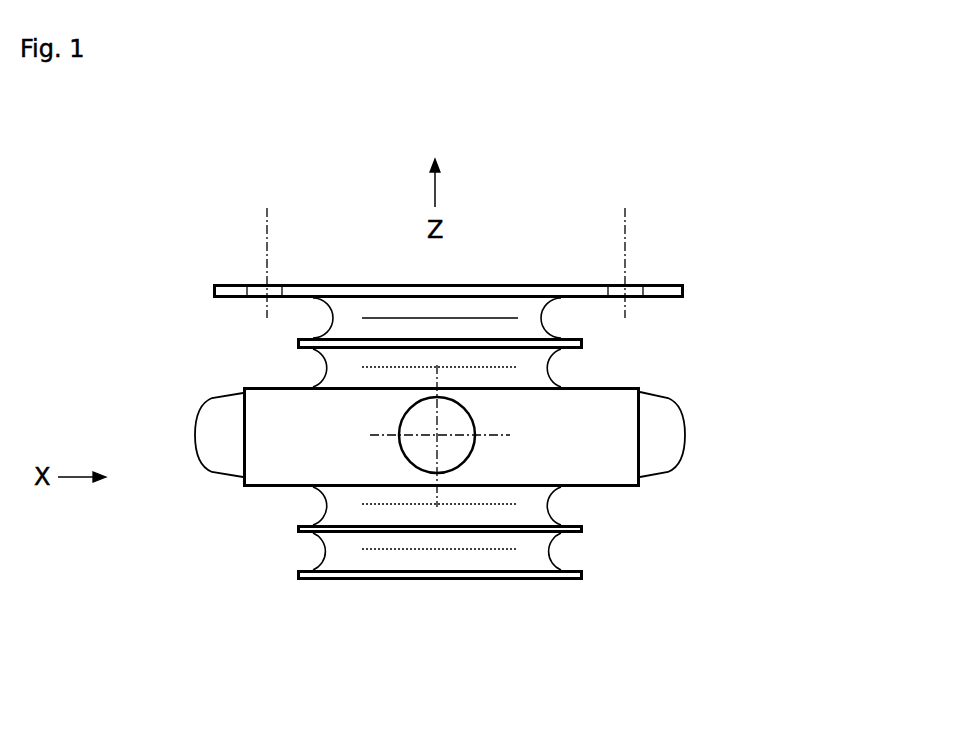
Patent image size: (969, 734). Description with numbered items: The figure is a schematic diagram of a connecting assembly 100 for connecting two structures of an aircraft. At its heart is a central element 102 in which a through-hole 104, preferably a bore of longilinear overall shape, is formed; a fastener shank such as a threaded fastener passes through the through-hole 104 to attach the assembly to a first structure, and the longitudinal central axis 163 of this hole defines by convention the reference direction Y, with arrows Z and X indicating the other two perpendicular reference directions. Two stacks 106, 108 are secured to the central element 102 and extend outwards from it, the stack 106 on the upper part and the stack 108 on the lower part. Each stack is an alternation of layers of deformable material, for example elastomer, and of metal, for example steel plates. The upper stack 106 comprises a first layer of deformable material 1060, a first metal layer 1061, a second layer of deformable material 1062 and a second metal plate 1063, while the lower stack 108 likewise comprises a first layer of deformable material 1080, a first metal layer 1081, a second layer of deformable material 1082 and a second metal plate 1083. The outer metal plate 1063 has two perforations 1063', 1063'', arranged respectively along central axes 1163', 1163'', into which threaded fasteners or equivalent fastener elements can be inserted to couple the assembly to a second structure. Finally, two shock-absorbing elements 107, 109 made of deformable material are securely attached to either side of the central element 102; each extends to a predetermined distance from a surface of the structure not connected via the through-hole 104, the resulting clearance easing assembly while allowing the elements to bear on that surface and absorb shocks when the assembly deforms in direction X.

The connecting assembly 100 is at (363, 166).
The central element 102 is at (262, 402).
The through-hole 104 is at (458, 453).
The stack 106 is at (717, 284).
The shock-absorbing element 107 is at (688, 455).
The stack 108 is at (717, 492).
The shock-absorbing element 109 is at (210, 415).
The central axis 163 is at (430, 432).
The first layer of deformable material 1060 is at (545, 367).
The first metal layer 1061 is at (306, 332).
The second layer of deformable material 1062 is at (540, 322).
The second metal plate 1063 is at (442, 255).
The perforation 1063' is at (573, 263).
The perforation 1063'' is at (207, 267).
The central axis 1163' is at (574, 257).
The central axis 1163'' is at (212, 255).
The first layer of deformable material 1080 is at (545, 515).
The first metal layer 1081 is at (312, 518).
The second layer of deformable material 1082 is at (545, 562).
The second metal plate 1083 is at (380, 581).